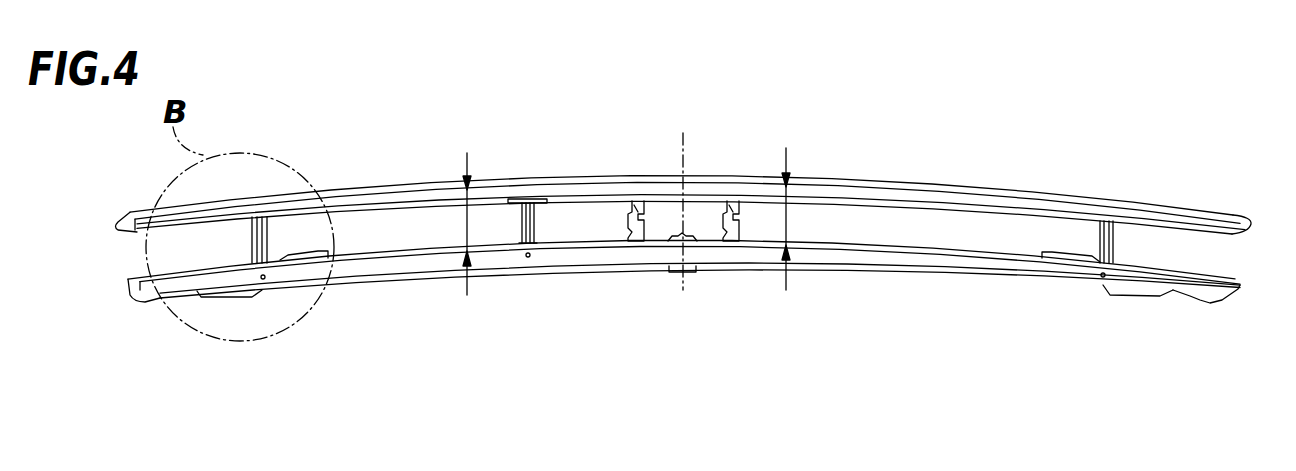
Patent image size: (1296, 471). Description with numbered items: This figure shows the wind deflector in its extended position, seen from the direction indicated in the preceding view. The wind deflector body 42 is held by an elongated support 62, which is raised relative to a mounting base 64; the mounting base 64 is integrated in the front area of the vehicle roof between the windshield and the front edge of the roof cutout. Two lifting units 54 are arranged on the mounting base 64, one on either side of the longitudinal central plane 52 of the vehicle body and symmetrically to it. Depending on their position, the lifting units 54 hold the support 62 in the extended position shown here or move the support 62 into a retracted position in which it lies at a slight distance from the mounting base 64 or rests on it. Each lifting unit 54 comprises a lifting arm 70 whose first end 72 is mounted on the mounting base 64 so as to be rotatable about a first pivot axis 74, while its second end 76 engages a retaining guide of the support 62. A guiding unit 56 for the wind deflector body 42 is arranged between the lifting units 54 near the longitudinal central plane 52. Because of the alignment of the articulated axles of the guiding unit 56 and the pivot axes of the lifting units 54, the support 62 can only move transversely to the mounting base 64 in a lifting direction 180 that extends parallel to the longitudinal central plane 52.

The wind deflector body 42 is at (1245, 222).
The longitudinal central plane 52 is at (684, 140).
The lifting unit 54 is at (257, 247).
The guiding unit 56 is at (624, 241).
The support 62 is at (936, 198).
The mounting base 64 is at (949, 263).
The lifting arm 70 is at (541, 222).
The first end 72 is at (537, 240).
The first pivot axis 74 is at (529, 258).
The second end 76 is at (520, 213).
The lifting direction 180 is at (463, 225).